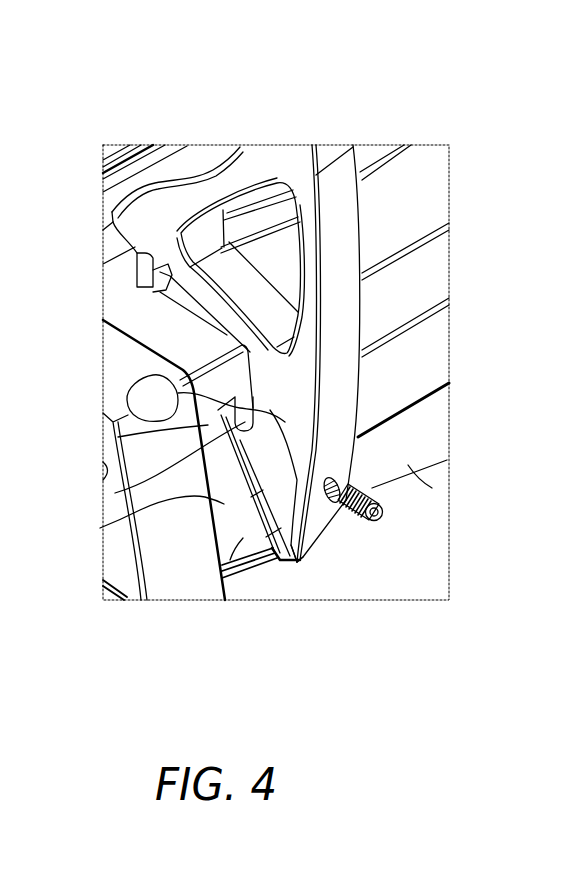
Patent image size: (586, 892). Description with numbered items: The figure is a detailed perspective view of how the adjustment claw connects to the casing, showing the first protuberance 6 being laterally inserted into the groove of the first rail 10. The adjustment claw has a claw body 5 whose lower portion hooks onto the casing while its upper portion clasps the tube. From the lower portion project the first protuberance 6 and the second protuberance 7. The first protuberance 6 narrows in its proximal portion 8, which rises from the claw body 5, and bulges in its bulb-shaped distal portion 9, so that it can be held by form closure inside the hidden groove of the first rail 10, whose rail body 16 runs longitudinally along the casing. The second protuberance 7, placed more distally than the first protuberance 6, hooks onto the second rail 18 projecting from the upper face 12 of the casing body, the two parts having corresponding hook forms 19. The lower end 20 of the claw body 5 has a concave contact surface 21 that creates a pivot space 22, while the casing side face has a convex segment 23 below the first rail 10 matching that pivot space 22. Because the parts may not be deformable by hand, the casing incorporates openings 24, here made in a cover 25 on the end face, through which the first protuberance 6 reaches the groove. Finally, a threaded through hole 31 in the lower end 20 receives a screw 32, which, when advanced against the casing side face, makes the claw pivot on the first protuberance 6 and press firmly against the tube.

The claw body 5 is at (337, 247).
The first protuberance 6 is at (212, 429).
The second protuberance 7 is at (165, 296).
The proximal portion 8 is at (105, 495).
The distal portion 9 is at (127, 397).
The first rail 10 is at (418, 348).
The upper face 12 is at (110, 434).
The rail body 16 is at (296, 562).
The second rail 18 is at (408, 187).
The hook form 19 is at (137, 290).
The lower end 20 is at (320, 533).
The contact surface 21 is at (227, 540).
The pivot space 22 is at (276, 558).
The convex segment 23 is at (420, 483).
The opening 24 is at (100, 528).
The cover 25 is at (182, 562).
The threaded through hole 31 is at (348, 486).
The screw 32 is at (382, 513).